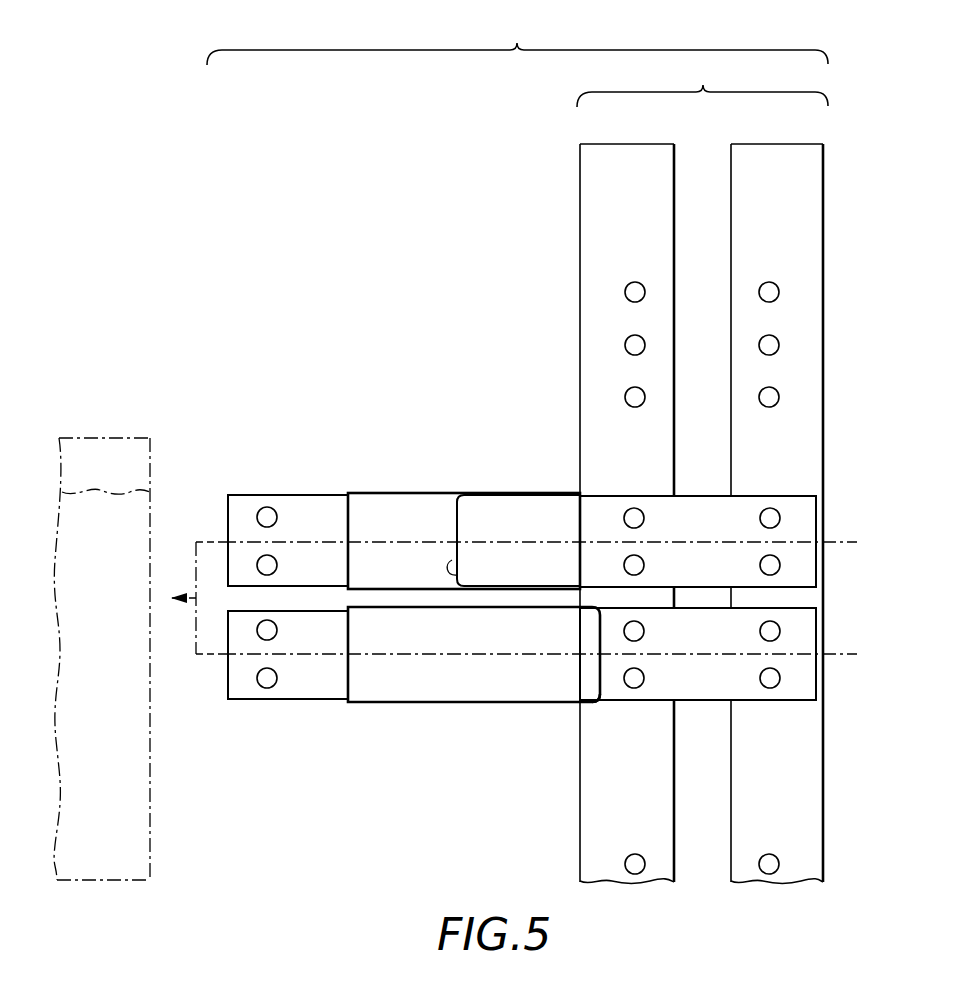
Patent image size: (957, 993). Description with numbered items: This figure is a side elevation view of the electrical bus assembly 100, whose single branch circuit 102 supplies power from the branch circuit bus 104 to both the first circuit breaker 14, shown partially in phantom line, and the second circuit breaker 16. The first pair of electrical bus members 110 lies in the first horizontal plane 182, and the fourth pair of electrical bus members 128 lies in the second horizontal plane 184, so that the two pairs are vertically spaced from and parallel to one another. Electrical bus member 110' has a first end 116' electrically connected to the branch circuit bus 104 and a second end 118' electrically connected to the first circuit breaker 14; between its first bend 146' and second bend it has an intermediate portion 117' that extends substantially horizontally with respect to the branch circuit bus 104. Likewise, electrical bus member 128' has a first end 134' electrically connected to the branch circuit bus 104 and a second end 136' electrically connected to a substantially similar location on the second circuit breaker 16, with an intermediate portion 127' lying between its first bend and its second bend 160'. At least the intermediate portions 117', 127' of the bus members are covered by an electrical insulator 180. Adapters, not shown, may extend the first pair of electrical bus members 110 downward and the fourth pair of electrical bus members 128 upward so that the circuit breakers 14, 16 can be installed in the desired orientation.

The first circuit breaker 14 is at (92, 447).
The second circuit breaker 16 is at (93, 870).
The electrical bus assembly 100 is at (537, 37).
The single branch circuit 102 is at (445, 312).
The branch circuit bus 104 is at (702, 473).
The first pair of electrical bus members 110 is at (404, 499).
The first electrical bus member 110' is at (290, 514).
The intermediate portion 117' is at (480, 519).
The second end 118' is at (268, 477).
The first end 116' is at (703, 492).
The fourth pair of electrical bus members 128 is at (444, 705).
The second electrical bus member 128' is at (297, 683).
The intermediate portion 127' is at (626, 708).
The second end 136' is at (287, 710).
The first end 134' is at (698, 705).
The first bend 146' is at (493, 562).
The second bend 160' is at (478, 654).
The electrical insulator 180 is at (533, 493).
The first horizontal plane 182 is at (857, 541).
The second horizontal plane 184 is at (857, 653).